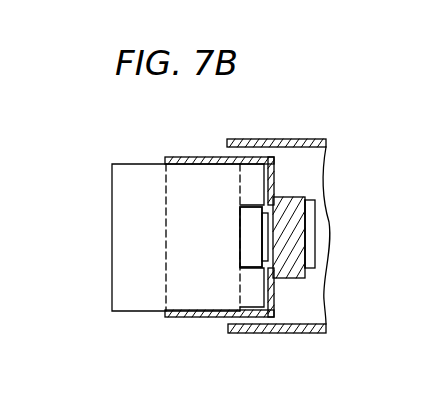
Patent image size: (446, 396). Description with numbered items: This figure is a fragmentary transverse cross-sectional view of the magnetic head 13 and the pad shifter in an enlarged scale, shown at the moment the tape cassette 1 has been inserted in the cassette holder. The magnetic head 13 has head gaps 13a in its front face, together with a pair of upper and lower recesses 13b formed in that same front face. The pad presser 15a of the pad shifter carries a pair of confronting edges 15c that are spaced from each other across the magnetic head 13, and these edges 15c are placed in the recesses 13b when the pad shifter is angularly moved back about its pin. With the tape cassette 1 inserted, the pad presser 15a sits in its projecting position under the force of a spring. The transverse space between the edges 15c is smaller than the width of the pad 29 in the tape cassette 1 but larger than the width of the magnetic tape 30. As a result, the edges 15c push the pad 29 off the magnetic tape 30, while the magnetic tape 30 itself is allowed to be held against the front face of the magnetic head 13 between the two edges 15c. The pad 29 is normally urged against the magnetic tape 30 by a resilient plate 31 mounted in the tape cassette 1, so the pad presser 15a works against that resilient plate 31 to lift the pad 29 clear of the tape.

The tape cassette 1 is at (306, 334).
The magnetic head 13 is at (127, 210).
The head gaps 13a is at (266, 240).
The recesses 13b is at (254, 178).
The pad presser 15a is at (203, 158).
The confronting edges 15c is at (275, 174).
The pad 29 is at (303, 224).
The magnetic tape 30 is at (284, 203).
The resilient plate 31 is at (309, 253).